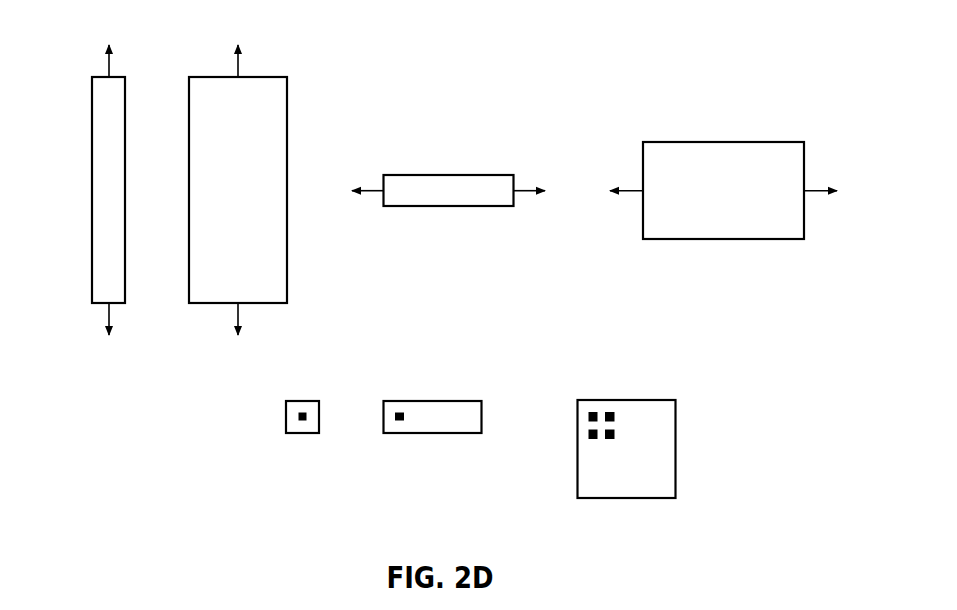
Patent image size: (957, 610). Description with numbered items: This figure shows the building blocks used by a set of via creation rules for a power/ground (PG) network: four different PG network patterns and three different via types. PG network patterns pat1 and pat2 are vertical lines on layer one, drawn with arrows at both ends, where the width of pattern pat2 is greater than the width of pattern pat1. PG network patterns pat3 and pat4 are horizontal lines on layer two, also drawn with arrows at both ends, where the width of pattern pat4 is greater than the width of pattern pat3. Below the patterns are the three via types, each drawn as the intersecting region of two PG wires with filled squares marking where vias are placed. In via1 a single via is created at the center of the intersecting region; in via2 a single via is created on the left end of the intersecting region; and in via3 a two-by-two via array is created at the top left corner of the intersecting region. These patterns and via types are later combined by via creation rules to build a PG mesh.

The PG network pattern pat1 is at (82, 190).
The PG network pattern pat2 is at (238, 190).
The PG network pattern pat3 is at (448, 190).
The PG network pattern pat4 is at (723, 190).
The via via1 is at (302, 438).
The via via2 is at (433, 438).
The via via3 is at (627, 470).